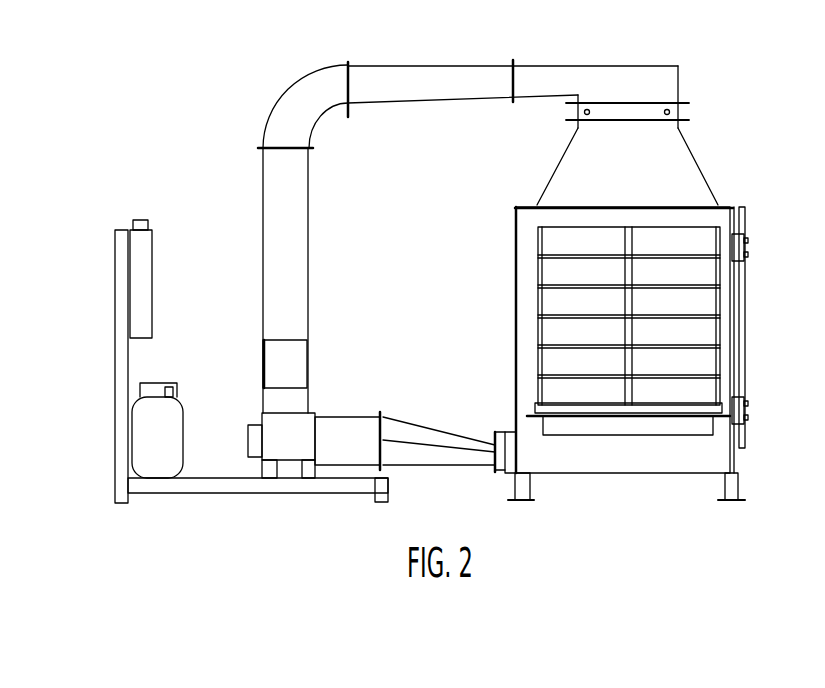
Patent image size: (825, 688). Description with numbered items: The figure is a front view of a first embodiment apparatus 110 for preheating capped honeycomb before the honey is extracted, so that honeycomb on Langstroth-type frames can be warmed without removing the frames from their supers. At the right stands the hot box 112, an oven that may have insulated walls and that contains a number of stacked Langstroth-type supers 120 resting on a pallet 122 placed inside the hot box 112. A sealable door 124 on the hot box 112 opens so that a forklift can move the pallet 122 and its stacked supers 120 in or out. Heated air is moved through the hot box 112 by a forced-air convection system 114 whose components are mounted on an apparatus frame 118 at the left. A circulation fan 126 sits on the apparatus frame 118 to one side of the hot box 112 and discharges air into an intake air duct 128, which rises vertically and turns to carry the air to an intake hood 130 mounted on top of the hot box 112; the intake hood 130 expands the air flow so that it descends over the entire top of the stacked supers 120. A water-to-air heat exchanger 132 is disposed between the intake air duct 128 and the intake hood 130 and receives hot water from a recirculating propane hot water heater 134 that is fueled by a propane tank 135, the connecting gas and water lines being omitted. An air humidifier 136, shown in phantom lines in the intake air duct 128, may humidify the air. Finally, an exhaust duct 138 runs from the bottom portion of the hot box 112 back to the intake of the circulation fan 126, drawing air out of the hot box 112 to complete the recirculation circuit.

The apparatus 110 is at (770, 118).
The hot box 112 is at (515, 273).
The forced-air convection system 114 is at (296, 80).
The apparatus frame 118 is at (113, 346).
The supers 120 is at (538, 337).
The pallet 122 is at (703, 437).
The sealable door 124 is at (748, 290).
The circulation fan 126 is at (303, 448).
The intake air duct 128 is at (309, 207).
The intake hood 130 is at (557, 162).
The water-to-air heat exchanger 132 is at (565, 113).
The recirculating propane hot water heater 134 is at (153, 290).
The propane tank 135 is at (178, 390).
The air humidifier 136 is at (307, 368).
The exhaust duct 138 is at (427, 425).